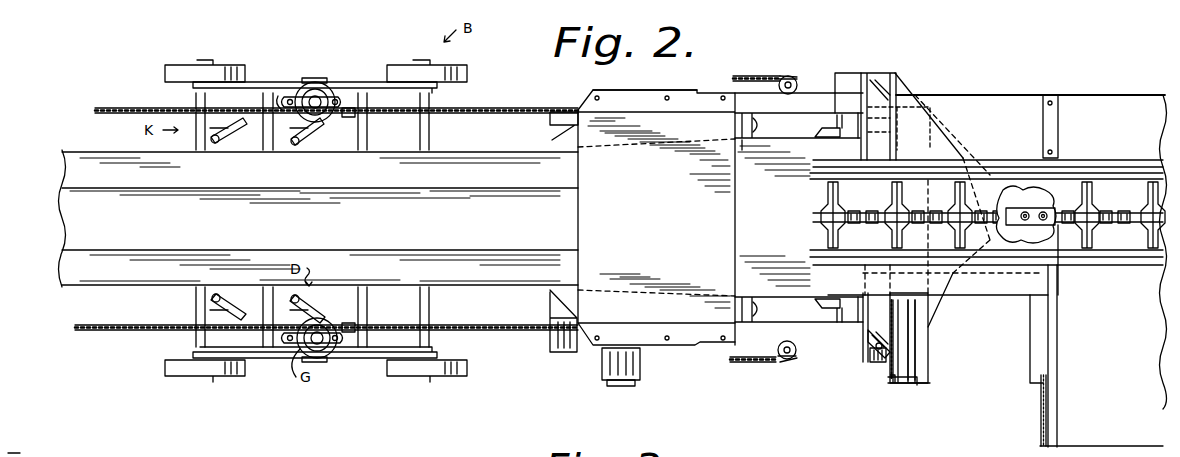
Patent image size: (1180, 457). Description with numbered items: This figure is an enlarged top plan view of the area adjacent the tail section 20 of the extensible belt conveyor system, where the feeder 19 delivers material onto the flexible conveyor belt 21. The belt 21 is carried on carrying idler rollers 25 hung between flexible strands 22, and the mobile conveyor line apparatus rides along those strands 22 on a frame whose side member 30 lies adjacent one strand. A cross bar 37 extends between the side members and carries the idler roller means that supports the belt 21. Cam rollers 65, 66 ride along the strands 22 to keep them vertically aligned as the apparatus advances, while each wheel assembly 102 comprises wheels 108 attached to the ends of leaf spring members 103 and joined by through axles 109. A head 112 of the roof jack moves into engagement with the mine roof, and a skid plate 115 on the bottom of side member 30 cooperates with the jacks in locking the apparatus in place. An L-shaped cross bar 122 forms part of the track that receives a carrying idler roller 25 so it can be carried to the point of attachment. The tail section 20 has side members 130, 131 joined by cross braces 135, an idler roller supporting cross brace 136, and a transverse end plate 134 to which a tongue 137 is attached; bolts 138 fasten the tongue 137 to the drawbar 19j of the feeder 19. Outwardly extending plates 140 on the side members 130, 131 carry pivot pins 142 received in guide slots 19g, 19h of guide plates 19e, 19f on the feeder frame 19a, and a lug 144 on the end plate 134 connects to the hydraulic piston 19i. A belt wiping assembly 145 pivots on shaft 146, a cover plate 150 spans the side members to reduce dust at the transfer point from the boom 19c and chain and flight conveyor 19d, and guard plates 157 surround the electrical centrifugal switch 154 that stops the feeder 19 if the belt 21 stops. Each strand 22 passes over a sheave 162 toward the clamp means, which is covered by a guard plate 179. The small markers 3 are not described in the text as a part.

The flexible conveyor belt 21 is at (62, 214).
The flexible strands 22 is at (134, 110).
The post 3 is at (268, 150).
The carrying idler roller 25 is at (228, 142).
The cross bar 37 is at (310, 146).
The cam roller 65 is at (358, 120).
The cam roller 66 is at (280, 106).
The wheel assembly 102 is at (462, 53).
The elongated flat spring members 103 is at (346, 356).
The wheels 108 is at (165, 70).
The through axles 109 is at (430, 132).
The head 112 is at (332, 86).
The skid plate 115 is at (360, 340).
The L-shaped cross bar 122 is at (200, 302).
The side member 30 is at (272, 332).
The side member 130 is at (734, 100).
The side member 131 is at (750, 333).
The transverse end plate 134 is at (926, 352).
The cross braces 135 is at (760, 139).
The idler roller supporting cross brace 136 is at (578, 302).
The tongue 137 is at (960, 282).
The bolts 138 is at (1034, 206).
The outwardly extending plates 140 is at (835, 73).
The pivot pin 142 is at (860, 97).
The lug 144 is at (916, 381).
The belt wiping assembly 145 is at (822, 303).
The shaft 146 is at (830, 124).
The cover plate 150 is at (668, 226).
The electrical centrifugal switch 154 is at (626, 385).
The guard plates 157 is at (641, 363).
The sheave 162 is at (786, 76).
The guard plate 179 is at (655, 89).
The feeder 19 is at (1081, 54).
The frame 19a is at (1040, 386).
The boom 19c is at (998, 160).
The chain and flight conveyor 19d is at (1096, 252).
The guide plate 19e is at (878, 74).
The guide plate 19f is at (866, 362).
The guide slot 19g is at (896, 78).
The guide slot 19h is at (884, 366).
The hydraulic piston 19i is at (918, 336).
The drawbar 19j is at (1058, 266).
The tail section 20 is at (835, 52).